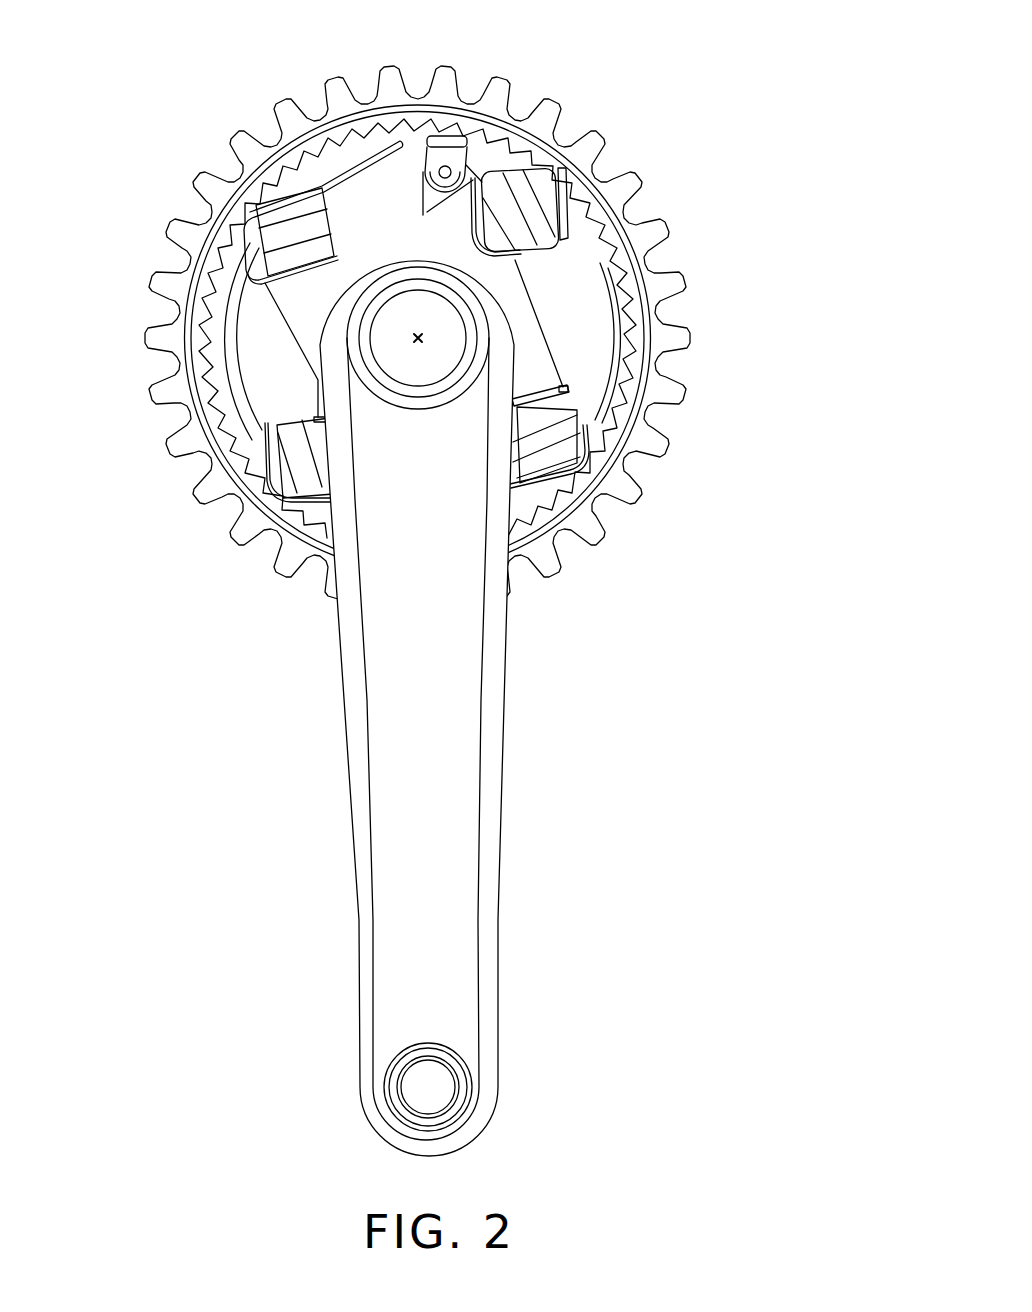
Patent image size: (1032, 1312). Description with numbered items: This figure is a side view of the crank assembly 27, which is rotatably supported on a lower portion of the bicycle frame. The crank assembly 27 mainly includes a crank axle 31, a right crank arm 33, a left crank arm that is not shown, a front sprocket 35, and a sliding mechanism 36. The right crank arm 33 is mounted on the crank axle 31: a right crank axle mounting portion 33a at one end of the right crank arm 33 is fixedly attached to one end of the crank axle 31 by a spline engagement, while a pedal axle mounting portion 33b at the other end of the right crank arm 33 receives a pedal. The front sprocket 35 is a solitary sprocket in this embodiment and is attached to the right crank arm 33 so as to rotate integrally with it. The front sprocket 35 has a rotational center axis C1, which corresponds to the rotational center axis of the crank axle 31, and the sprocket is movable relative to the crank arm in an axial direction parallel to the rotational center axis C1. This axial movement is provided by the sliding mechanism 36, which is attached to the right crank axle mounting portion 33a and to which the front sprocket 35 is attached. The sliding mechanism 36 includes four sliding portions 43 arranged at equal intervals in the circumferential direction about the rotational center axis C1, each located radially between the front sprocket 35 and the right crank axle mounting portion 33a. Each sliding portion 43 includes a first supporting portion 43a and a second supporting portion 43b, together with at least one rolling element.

The crank assembly 27 is at (641, 92).
The front sprocket 35 is at (665, 165).
The sliding mechanism 36 is at (262, 297).
The crank axle 31 is at (415, 365).
The right crank arm 33 is at (512, 730).
The right crank axle mounting portion 33a is at (500, 322).
The pedal axle mounting portion 33b is at (488, 1087).
The sliding portion 43 is at (323, 321).
The first supporting portion 43a is at (568, 375).
The second supporting portion 43b is at (570, 510).
The rotational center axis C1 is at (418, 333).